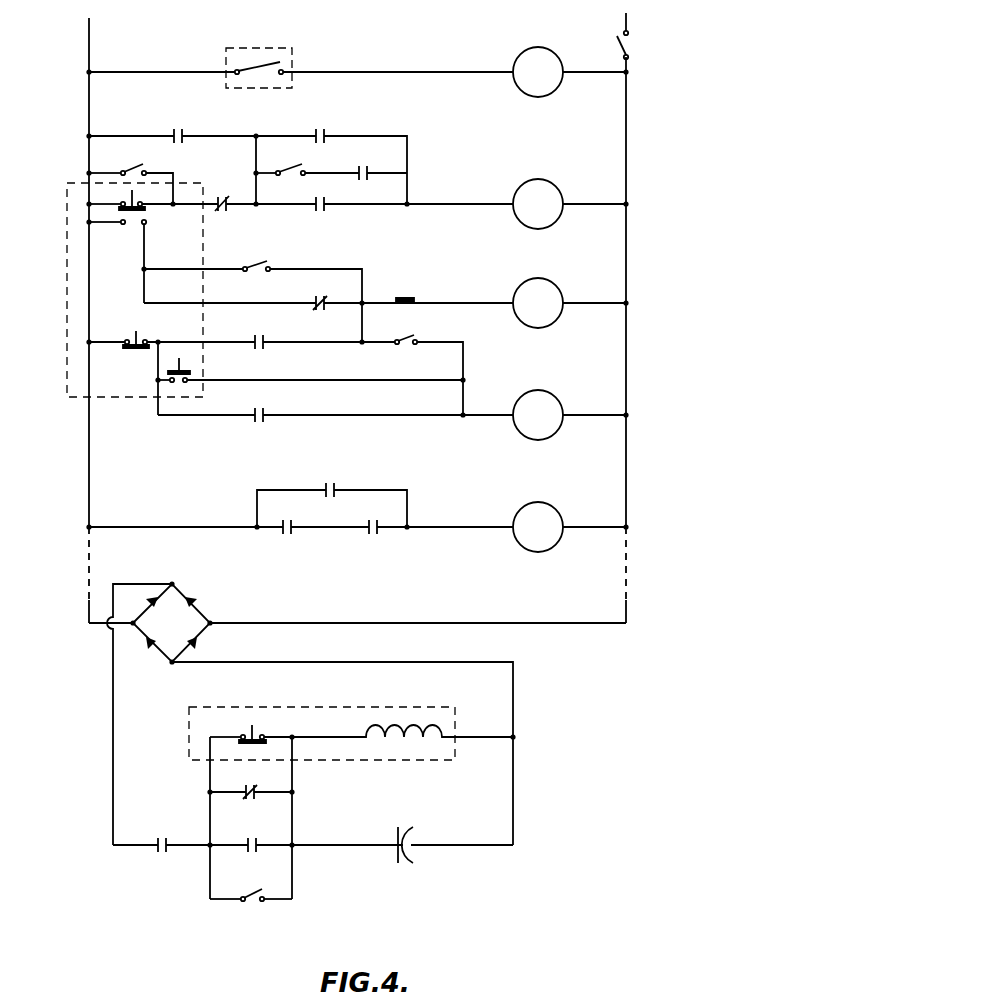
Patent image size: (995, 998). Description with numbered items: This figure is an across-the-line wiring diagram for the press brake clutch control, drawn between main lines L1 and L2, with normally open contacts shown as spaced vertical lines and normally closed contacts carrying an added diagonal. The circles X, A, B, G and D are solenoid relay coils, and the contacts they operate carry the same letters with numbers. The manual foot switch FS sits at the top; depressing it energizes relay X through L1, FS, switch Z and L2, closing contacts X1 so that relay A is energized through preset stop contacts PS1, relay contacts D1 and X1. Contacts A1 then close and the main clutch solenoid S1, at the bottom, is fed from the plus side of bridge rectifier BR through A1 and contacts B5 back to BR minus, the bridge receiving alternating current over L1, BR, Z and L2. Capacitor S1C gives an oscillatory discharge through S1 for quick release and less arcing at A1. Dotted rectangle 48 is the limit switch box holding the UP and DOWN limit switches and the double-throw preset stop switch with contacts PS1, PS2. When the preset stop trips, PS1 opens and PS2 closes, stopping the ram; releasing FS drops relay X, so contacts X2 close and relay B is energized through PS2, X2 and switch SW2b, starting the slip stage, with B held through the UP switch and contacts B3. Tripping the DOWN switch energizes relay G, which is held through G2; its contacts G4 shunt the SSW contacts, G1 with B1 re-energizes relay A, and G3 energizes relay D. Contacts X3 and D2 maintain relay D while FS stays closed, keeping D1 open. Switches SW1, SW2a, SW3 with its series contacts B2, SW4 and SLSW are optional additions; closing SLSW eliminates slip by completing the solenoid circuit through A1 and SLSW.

The dotted rectangle (limit switch box) 48 is at (66, 301).
The main line L1 is at (89, 311).
The main line L2 is at (624, 311).
The foot switch FS is at (259, 58).
The relay coil X is at (538, 72).
The switch Z is at (631, 45).
The relay contacts B1 is at (179, 128).
The relay contacts G1 is at (321, 128).
The switch SW2a is at (124, 164).
The switch SW3 is at (289, 164).
The relay contacts B2 is at (365, 166).
The preset stop switch contacts PS1 is at (141, 198).
The relay contacts D1 is at (223, 196).
The relay contacts X1 is at (321, 196).
The relay coil A is at (538, 204).
The preset stop switch contacts PS2 is at (147, 225).
The switch SW1 is at (257, 258).
The relay contacts X2 is at (323, 294).
The switch SW2b is at (405, 290).
The relay coil B is at (538, 303).
The up limit switch UP is at (136, 332).
The relay contacts B3 is at (261, 334).
The switch SW4 is at (406, 331).
The down limit switch DOWN is at (181, 376).
The relay contacts G2 is at (262, 407).
The relay coil G is at (538, 415).
The relay contacts G3 is at (328, 482).
The relay contacts X3 is at (285, 538).
The relay contacts D2 is at (374, 538).
The relay coil D is at (538, 527).
The bridge rectifier BR is at (171, 623).
The switch contacts SSW is at (322, 733).
The main clutch operating solenoid coil S1 is at (437, 741).
The relay contacts B5 is at (247, 801).
The relay contacts A1 is at (158, 854).
The relay contacts G4 is at (250, 854).
The capacitor S1C is at (399, 857).
The switch SLSW is at (246, 906).